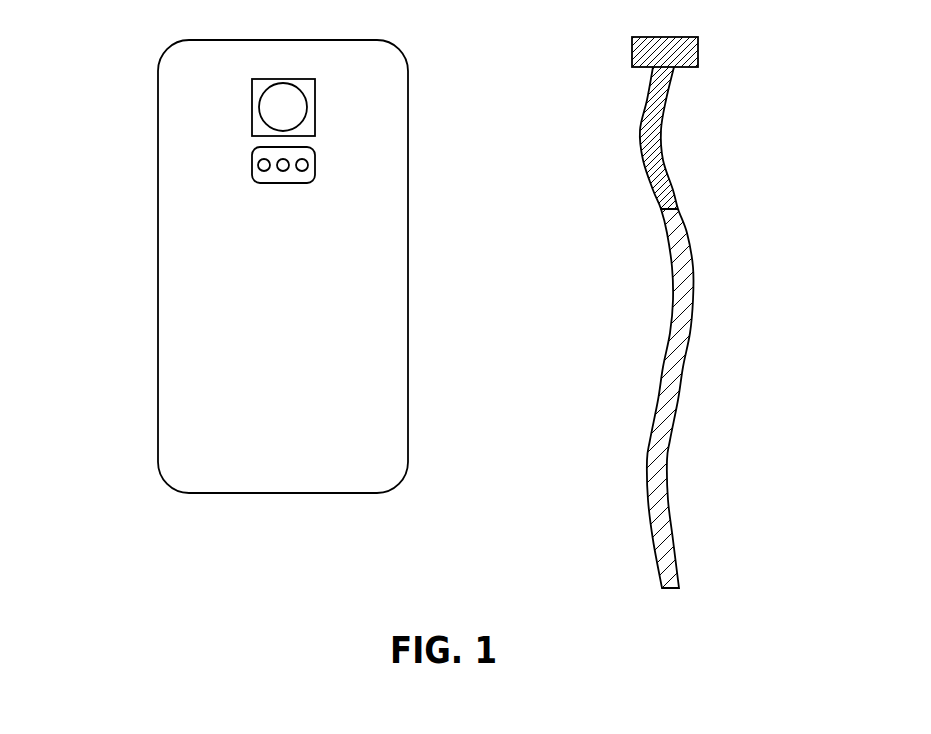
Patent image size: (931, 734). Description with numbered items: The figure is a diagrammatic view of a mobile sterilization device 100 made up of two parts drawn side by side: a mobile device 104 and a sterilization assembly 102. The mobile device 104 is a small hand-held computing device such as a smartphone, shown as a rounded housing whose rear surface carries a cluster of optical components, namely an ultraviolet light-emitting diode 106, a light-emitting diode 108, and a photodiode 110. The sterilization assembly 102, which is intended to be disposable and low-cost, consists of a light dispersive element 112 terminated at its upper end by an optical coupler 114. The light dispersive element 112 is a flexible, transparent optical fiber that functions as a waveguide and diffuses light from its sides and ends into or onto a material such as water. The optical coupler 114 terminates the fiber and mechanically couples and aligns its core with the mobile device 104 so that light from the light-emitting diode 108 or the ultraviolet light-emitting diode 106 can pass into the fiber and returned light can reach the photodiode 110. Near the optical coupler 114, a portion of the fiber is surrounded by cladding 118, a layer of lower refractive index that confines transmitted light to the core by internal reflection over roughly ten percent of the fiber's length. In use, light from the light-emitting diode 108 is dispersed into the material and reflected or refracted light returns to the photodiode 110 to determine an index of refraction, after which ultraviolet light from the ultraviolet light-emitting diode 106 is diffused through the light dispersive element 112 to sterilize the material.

The mobile sterilization device 100 is at (283, 309).
The sterilization assembly 102 is at (709, 347).
The mobile device 104 is at (158, 269).
The ultraviolet light-emitting diode 106 is at (263, 163).
The light-emitting diode 108 is at (283, 168).
The photodiode 110 is at (309, 162).
The light dispersive element 112 is at (665, 413).
The optical coupler 114 is at (668, 37).
The cladding 118 is at (659, 128).